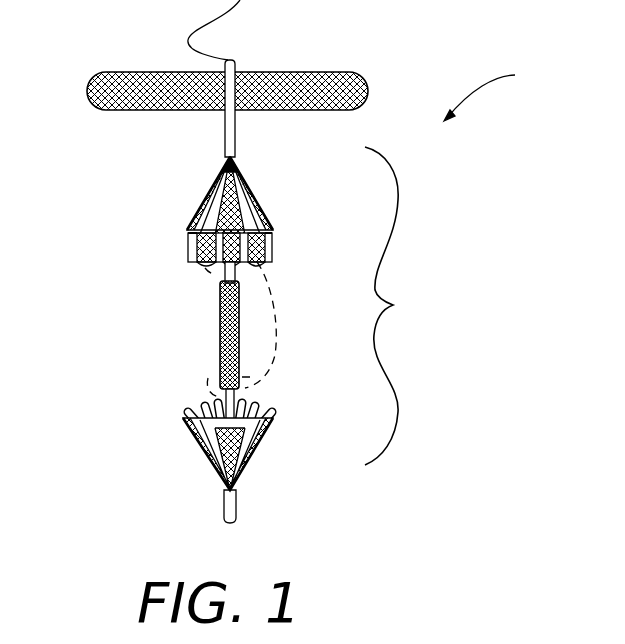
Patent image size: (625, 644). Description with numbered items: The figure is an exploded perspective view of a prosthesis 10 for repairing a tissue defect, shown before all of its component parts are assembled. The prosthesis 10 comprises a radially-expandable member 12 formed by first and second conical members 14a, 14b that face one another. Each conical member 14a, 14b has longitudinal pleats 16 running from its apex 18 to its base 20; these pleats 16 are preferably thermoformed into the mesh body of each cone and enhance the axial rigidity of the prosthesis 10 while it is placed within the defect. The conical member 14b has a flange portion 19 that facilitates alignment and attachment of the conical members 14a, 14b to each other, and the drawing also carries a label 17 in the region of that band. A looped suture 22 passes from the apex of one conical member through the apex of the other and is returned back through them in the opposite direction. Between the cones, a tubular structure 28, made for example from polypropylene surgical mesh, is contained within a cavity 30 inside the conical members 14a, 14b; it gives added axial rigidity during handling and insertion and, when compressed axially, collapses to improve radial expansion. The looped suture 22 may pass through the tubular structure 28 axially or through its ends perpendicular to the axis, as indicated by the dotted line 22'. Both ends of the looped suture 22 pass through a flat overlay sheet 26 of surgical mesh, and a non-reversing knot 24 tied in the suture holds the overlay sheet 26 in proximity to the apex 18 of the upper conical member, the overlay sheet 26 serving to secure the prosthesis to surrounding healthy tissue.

The prosthesis 10 is at (503, 91).
The radially-expandable member 12 is at (401, 306).
The first conical member 14a is at (258, 462).
The second conical member 14b is at (200, 205).
The longitudinal pleats 16 is at (188, 240).
The band segment 17 is at (255, 263).
The apex 18 is at (233, 157).
The flange portion 19 is at (210, 263).
The base 20 is at (275, 240).
The looped suture 22 is at (171, 293).
The dotted line 22' is at (273, 329).
The non-reversing knot 24 is at (235, 60).
The overlay sheet 26 is at (105, 80).
The tubular structure 28 is at (220, 338).
The cavity 30 is at (255, 410).